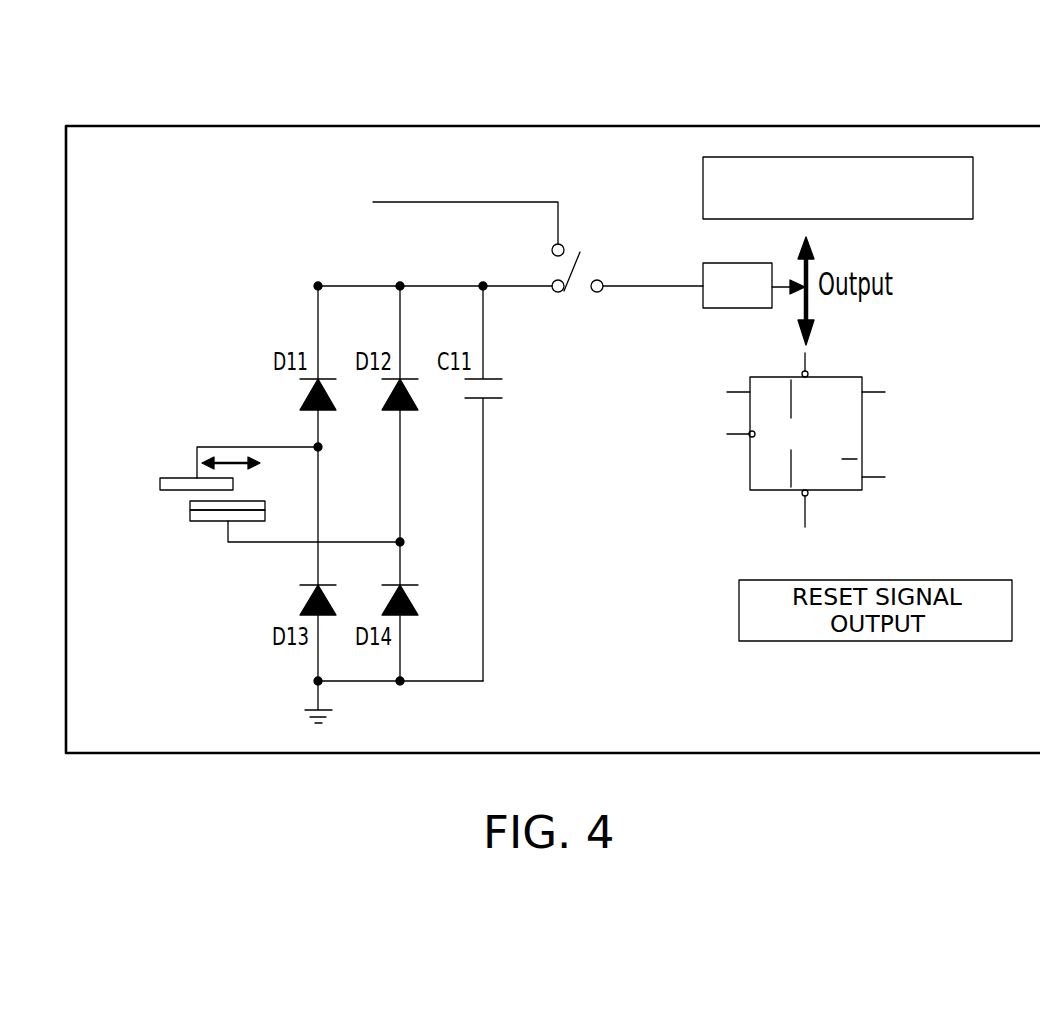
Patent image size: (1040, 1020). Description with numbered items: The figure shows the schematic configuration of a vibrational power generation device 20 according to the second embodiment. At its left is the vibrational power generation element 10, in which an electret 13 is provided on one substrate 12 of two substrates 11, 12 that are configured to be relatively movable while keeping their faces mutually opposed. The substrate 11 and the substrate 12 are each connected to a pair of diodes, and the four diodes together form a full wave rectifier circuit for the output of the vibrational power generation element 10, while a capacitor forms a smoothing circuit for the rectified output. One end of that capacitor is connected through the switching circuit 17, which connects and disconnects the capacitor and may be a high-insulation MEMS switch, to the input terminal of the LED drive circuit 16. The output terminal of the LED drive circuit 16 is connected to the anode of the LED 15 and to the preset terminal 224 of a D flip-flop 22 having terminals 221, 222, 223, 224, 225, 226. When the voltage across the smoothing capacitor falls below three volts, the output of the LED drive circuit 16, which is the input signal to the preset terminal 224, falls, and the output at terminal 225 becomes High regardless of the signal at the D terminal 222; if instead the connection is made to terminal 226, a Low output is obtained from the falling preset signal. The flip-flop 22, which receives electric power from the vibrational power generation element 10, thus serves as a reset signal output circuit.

The vibrational power generation device 20 is at (212, 126).
The vibrational power generation element 10 is at (240, 457).
The substrate 11 is at (178, 477).
The substrate 12 is at (190, 516).
The electret 13 is at (190, 504).
The LED 15 is at (703, 192).
The LED drive circuit 16 is at (703, 266).
The switching circuit 17 is at (569, 294).
The flip-flop 22 is at (862, 372).
The terminal 221 is at (815, 507).
The D terminal 222 is at (740, 362).
The terminal 223 is at (738, 441).
The preset terminal 224 is at (808, 358).
The terminal 225 is at (887, 375).
The terminal 226 is at (887, 462).